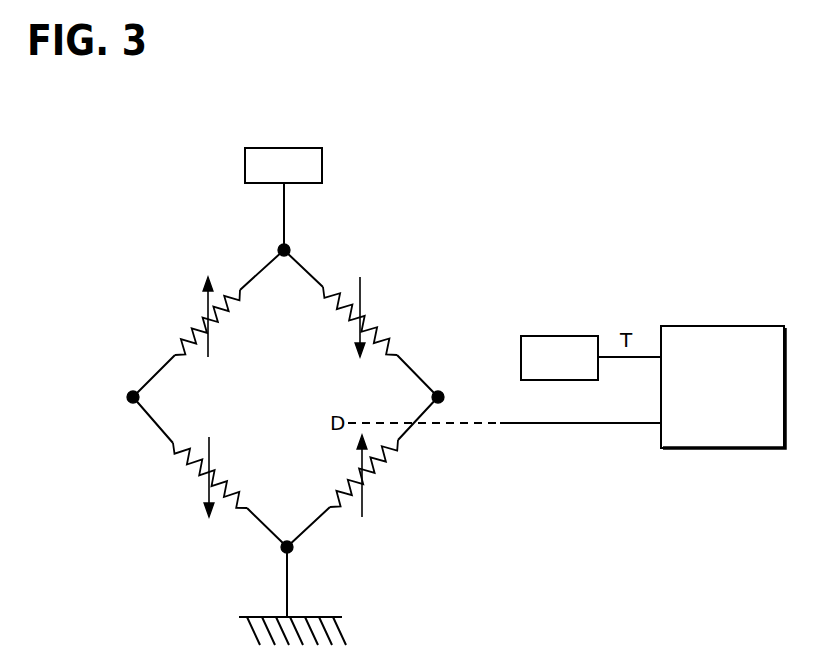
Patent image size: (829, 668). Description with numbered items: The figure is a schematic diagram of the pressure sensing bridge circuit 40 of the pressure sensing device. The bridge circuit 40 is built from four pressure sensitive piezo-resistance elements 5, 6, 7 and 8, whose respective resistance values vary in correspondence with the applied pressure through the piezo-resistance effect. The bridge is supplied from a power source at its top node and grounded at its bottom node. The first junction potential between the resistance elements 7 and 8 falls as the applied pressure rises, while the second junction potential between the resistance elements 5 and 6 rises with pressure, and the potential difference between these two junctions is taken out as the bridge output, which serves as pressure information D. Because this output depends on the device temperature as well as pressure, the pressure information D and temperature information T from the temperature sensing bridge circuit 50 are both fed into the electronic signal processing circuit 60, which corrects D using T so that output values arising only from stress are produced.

The pressure sensing bridge circuit 40 is at (140, 178).
The piezo-resistance element 8 is at (197, 320).
The piezo-resistance element 5 is at (375, 322).
The piezo-resistance element 7 is at (195, 470).
The piezo-resistance element 6 is at (380, 468).
The temperature sensing bridge circuit 50 is at (570, 336).
The electronic signal processing circuit 60 is at (742, 326).